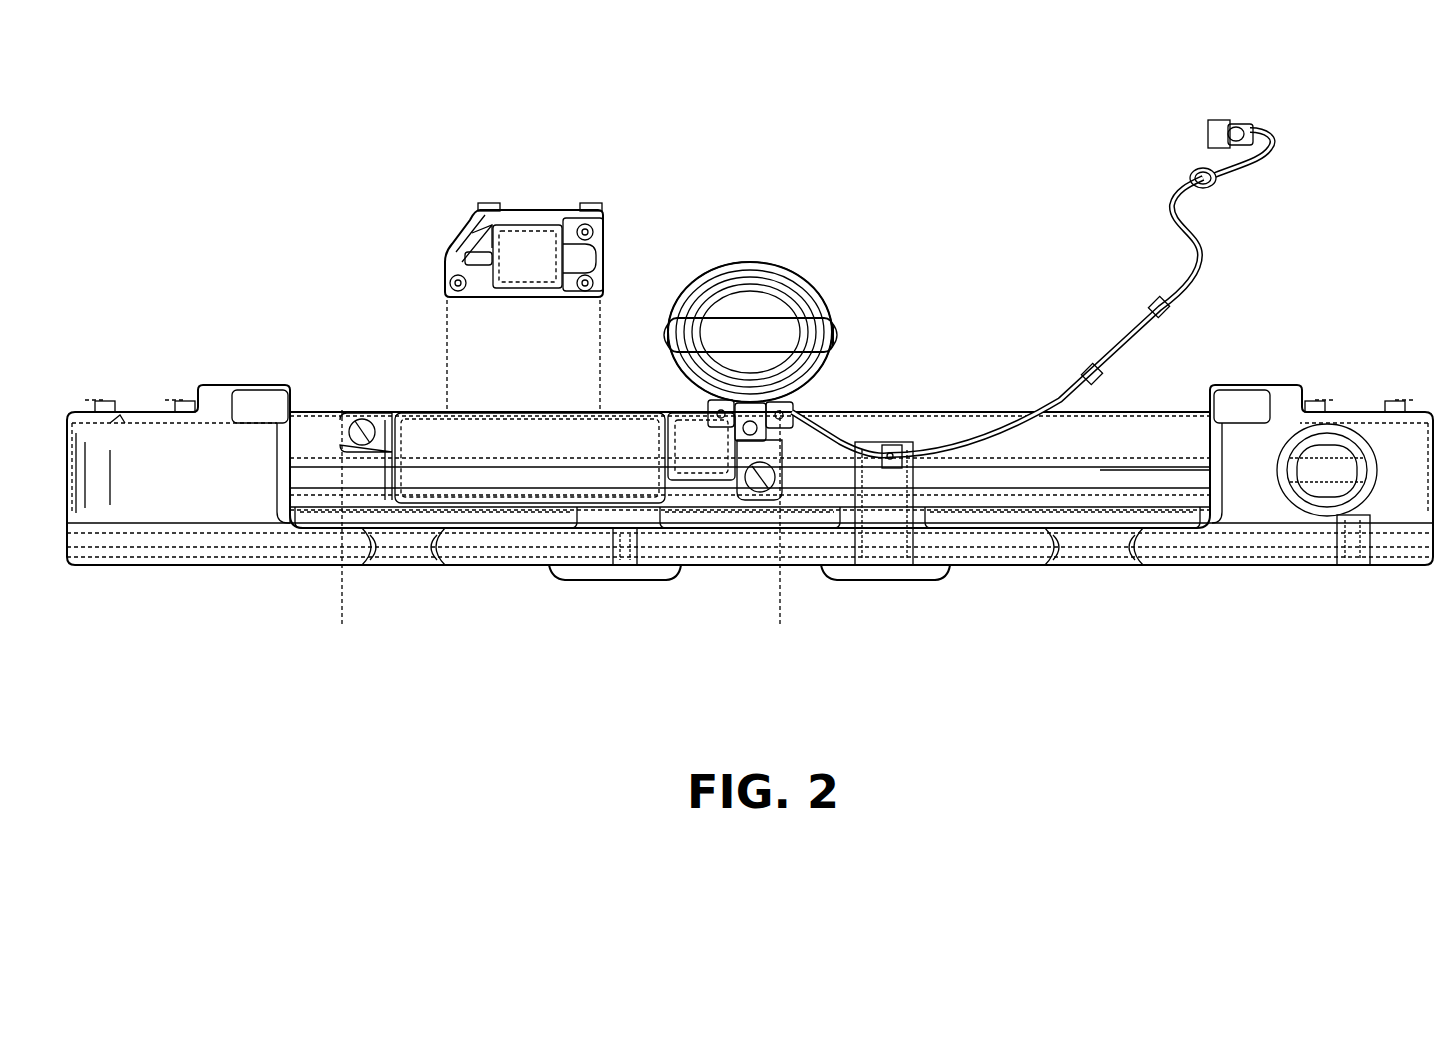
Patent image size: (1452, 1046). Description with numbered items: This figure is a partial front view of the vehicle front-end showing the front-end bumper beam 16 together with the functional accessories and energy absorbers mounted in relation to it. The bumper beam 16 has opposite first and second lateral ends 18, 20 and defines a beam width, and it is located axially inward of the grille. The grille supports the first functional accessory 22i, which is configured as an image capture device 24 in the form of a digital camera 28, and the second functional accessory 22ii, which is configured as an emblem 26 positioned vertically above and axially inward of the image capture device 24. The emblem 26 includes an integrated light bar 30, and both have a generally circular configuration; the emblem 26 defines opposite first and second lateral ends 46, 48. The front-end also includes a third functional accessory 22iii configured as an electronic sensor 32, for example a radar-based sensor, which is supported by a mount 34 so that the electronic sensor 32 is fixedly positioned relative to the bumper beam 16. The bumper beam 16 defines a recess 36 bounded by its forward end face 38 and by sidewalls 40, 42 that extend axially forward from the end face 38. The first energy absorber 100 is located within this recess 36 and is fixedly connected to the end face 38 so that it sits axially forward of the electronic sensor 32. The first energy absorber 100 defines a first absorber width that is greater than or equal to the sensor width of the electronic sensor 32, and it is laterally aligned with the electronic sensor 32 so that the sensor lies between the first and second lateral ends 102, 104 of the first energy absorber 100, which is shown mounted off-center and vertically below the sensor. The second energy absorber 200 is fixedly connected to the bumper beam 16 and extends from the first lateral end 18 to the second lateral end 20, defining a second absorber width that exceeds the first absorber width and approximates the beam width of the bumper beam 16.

The front-end bumper beam 16 is at (1232, 328).
The first lateral end 18 is at (72, 390).
The second lateral end 20 is at (1418, 390).
The first functional accessory 22i is at (800, 440).
The second functional accessory 22ii is at (800, 248).
The third functional accessory 22iii is at (440, 215).
The image capture device 24 is at (796, 410).
The emblem 26 is at (822, 292).
The digital camera 28 is at (783, 442).
The integrated light bar 30 is at (750, 278).
The electronic sensor 32 is at (528, 243).
The mount 34 is at (600, 237).
The recess 36 is at (950, 422).
The end face 38 is at (1112, 470).
The first sidewall 40 is at (352, 412).
The second sidewall 42 is at (1208, 456).
The first lateral end of emblem 46 is at (670, 333).
The second lateral end of emblem 48 is at (836, 331).
The first energy absorber 100 is at (412, 348).
The first lateral end of first energy absorber 102 is at (352, 390).
The second lateral end of first energy absorber 104 is at (720, 520).
The second energy absorber 200 is at (1193, 566).